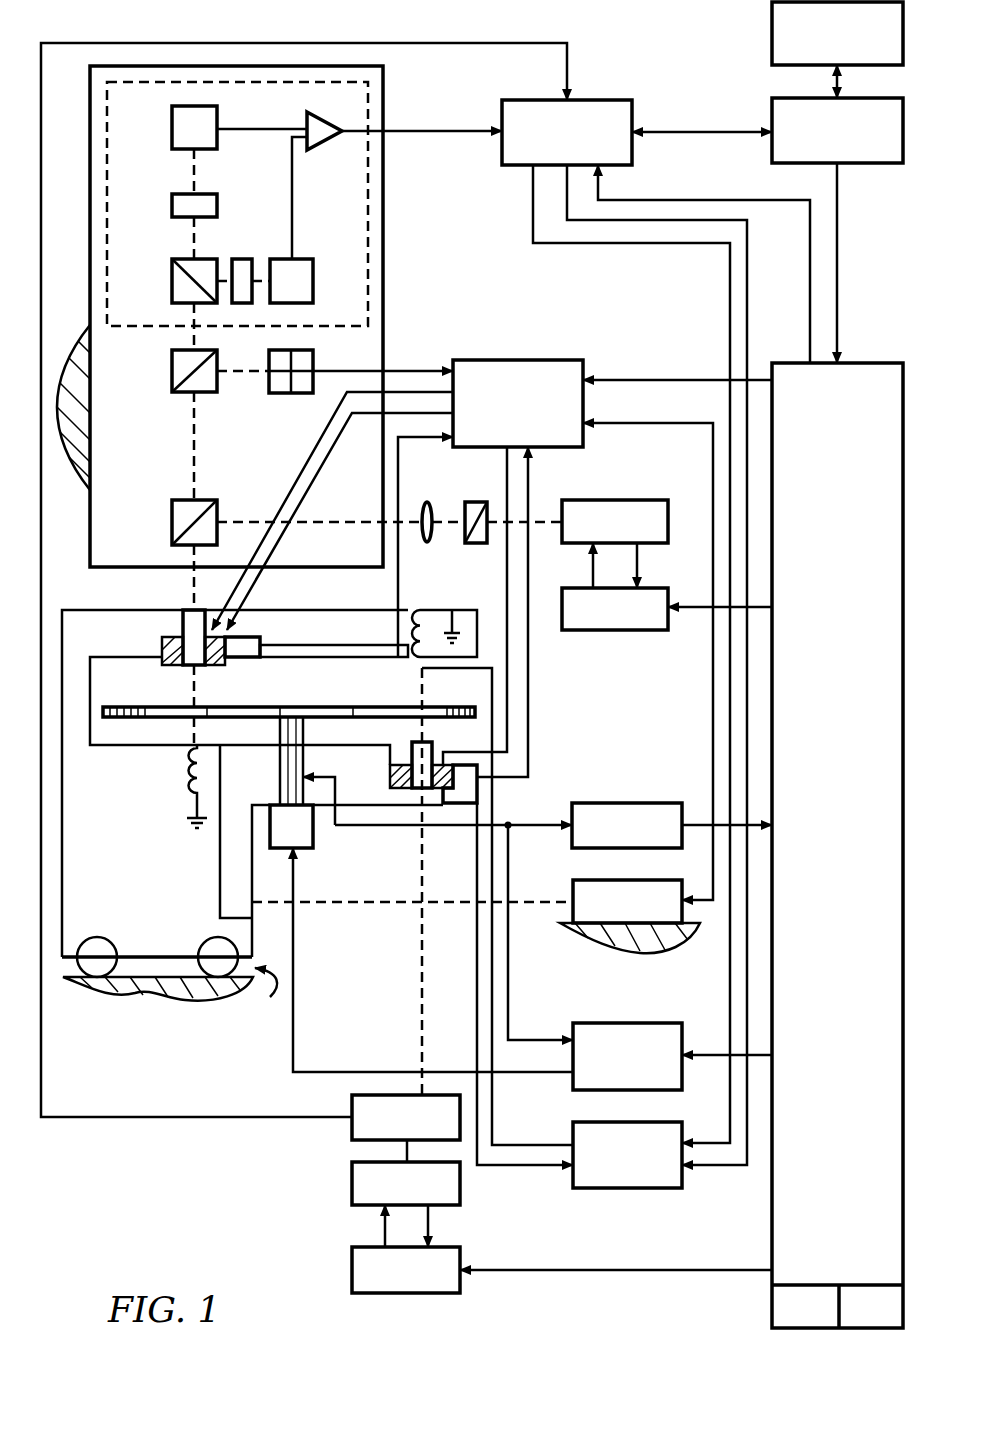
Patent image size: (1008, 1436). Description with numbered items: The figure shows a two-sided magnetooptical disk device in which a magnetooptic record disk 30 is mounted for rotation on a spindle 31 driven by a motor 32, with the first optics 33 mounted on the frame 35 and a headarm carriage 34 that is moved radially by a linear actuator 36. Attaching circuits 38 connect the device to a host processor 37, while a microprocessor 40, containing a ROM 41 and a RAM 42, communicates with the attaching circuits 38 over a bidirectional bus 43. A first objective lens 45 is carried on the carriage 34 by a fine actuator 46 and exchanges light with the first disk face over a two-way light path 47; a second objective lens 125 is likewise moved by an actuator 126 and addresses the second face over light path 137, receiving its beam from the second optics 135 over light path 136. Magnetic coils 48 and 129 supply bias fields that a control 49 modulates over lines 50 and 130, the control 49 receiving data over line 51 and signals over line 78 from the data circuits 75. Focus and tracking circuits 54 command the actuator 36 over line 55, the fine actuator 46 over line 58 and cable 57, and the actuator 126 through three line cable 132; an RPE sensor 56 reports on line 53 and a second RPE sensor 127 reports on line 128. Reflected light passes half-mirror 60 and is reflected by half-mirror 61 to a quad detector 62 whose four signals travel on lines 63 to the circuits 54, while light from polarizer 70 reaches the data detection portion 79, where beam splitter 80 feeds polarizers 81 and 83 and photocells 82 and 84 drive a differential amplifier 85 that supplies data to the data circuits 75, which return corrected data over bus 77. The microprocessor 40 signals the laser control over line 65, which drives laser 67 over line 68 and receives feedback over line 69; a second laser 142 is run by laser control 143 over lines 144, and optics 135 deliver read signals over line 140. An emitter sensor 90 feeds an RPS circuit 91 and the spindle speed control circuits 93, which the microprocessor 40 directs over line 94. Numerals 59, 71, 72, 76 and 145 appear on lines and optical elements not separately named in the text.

The magnetooptic record disk 30 is at (300, 707).
The spindle 31 is at (280, 770).
The motor 32 is at (313, 834).
The first optics 33 is at (384, 252).
The headarm carriage 34 is at (169, 986).
The frame 35 is at (75, 470).
The linear actuator 36 is at (573, 888).
The host processor 37 is at (772, 22).
The attaching circuits 38 is at (870, 163).
The microprocessor 40 is at (852, 875).
The read-only memory (ROM) 41 is at (878, 1328).
The random-access memory (RAM) 42 is at (805, 1328).
The bidirectional bus 43 is at (838, 270).
The first objective lens 45 is at (183, 620).
The fine actuator 46 is at (225, 664).
The two-way light path 47 is at (190, 695).
The magnetic coil 48 is at (180, 780).
The control 49 is at (620, 1188).
The line 50 is at (220, 866).
The line 51 is at (533, 205).
The line 53 is at (340, 610).
The focus and tracking circuits 54 is at (535, 360).
The line 55 is at (685, 423).
The RPE sensor 56 is at (260, 641).
The cable 57 is at (300, 472).
The line 58 is at (325, 465).
The line from microprocessor 59 is at (690, 380).
The one-half mirror 60 is at (172, 520).
The half-mirror 61 is at (183, 394).
The quad detector 62 is at (313, 360).
The lines 63 is at (420, 370).
The line 65 is at (700, 608).
The laser 67 is at (612, 500).
The line 68 is at (593, 570).
The line 69 is at (637, 563).
The polarizer 70 is at (478, 545).
The collimating lens 71 is at (425, 502).
The laser beam 72 is at (230, 520).
The data circuits 75 is at (600, 100).
The data line 76 is at (710, 200).
The bus 77 is at (720, 132).
The line 78 is at (747, 270).
The data detection portion 79 is at (157, 328).
The half-mirror or beam splitter 80 is at (172, 271).
The polarizer 81 is at (240, 259).
The photocell 82 is at (298, 259).
The polarizer 83 is at (172, 204).
The photocell 84 is at (172, 118).
The differential amplifier 85 is at (322, 147).
The emitter sensor 90 is at (405, 832).
The RPS circuit 91 is at (630, 803).
The spindle speed control circuits 93 is at (600, 1023).
The line 94 is at (718, 1055).
The second objective lens 125 is at (433, 740).
The actuator 126 is at (447, 790).
The RPE sensor 127 is at (477, 785).
The line 128 is at (528, 660).
The magnetic coil 129 is at (425, 610).
The line 130 is at (493, 1092).
The three line cable 132 is at (505, 495).
The second optics 135 is at (352, 1125).
The light path 136 is at (422, 1010).
The light path 137 is at (410, 745).
The line 140 is at (200, 1118).
The laser 142 is at (352, 1178).
The laser control 143 is at (408, 1293).
The lines 144 is at (385, 1232).
The control line 145 is at (615, 1270).